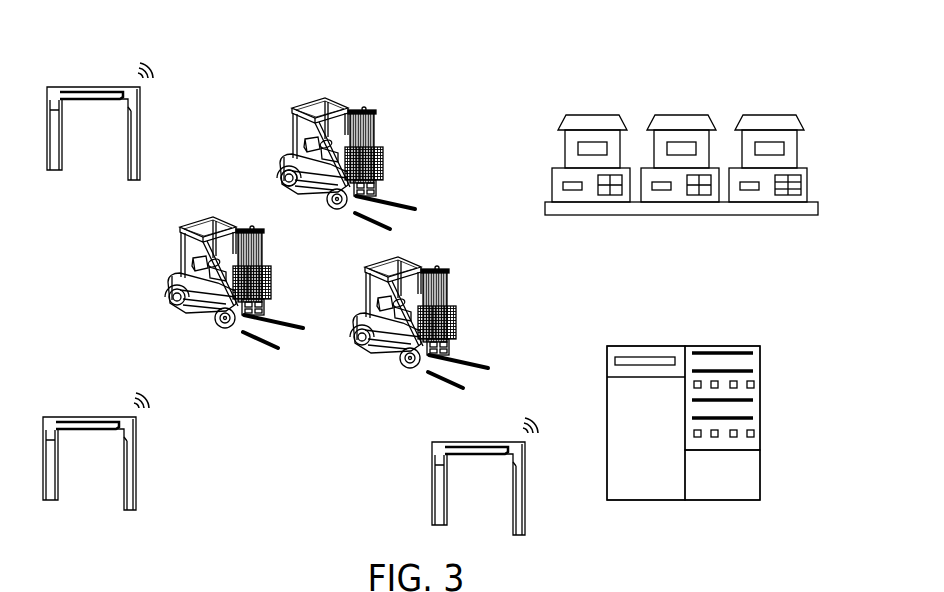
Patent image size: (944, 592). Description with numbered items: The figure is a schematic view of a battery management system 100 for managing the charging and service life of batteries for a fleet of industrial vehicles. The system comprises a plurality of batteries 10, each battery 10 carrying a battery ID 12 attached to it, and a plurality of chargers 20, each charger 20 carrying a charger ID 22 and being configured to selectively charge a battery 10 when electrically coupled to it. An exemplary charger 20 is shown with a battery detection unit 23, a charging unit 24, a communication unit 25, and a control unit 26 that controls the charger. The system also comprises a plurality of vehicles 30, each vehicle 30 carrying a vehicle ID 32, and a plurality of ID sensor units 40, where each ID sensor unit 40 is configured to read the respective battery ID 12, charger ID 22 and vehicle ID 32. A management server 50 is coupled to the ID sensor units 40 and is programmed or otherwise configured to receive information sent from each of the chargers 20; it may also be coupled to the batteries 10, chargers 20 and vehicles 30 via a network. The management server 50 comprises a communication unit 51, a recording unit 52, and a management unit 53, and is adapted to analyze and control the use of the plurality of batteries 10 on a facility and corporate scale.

The battery management system 100 is at (672, 131).
The battery 10 is at (570, 141).
The battery ID 12 is at (578, 148).
The charger 20 is at (565, 191).
The charger ID 22 is at (565, 186).
The battery detection unit 23 is at (796, 177).
The charging unit 24 is at (797, 180).
The communication unit 25 is at (786, 190).
The control unit 26 is at (792, 203).
The vehicle 30 is at (368, 93).
The vehicle ID 32 is at (283, 180).
The ID sensor unit 40 is at (95, 80).
The management server 50 is at (685, 388).
The communication unit 51 is at (622, 462).
The recording unit 52 is at (748, 477).
The management unit 53 is at (748, 412).